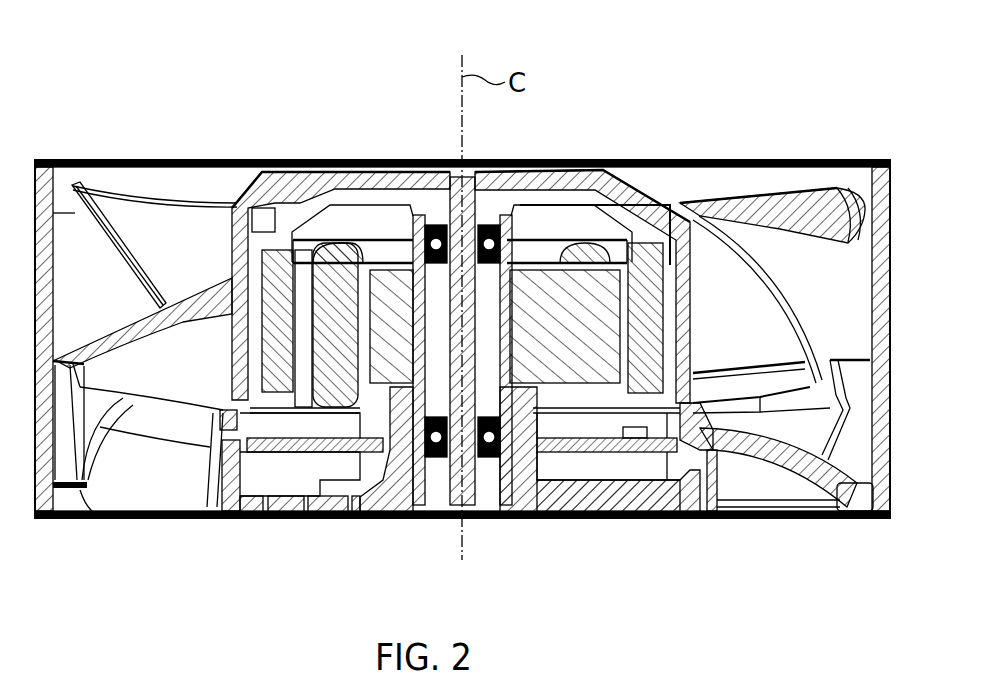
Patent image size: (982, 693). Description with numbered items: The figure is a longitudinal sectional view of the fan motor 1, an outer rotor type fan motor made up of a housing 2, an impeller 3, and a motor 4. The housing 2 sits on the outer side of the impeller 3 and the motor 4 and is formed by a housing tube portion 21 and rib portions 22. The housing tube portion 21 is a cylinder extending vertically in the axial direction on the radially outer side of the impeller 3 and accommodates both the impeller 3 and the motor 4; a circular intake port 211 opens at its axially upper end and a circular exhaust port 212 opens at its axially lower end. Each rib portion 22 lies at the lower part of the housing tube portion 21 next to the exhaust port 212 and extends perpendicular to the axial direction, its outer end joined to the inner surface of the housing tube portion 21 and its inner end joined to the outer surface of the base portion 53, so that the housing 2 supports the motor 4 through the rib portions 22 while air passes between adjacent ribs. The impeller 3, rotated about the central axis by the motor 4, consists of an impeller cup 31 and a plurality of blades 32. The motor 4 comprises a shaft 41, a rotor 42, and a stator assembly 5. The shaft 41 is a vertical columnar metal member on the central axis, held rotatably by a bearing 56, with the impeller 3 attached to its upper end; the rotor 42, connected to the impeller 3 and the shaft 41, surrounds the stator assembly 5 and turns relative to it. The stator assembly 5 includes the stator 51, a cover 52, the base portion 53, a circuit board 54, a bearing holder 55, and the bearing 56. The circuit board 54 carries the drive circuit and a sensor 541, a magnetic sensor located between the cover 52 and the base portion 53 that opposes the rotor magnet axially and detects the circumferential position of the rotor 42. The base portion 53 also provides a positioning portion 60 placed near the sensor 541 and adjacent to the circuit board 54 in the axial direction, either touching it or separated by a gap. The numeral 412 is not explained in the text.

The fan motor 1 is at (292, 72).
The housing 2 is at (228, 152).
The housing tube portion 21 is at (58, 262).
The intake port 211 is at (170, 162).
The exhaust port 212 is at (170, 498).
The rib portion 22 is at (808, 478).
The impeller 3 is at (741, 186).
The impeller cup 31 is at (683, 168).
The blades 32 is at (820, 165).
The motor 4 is at (333, 571).
The shaft 41 is at (415, 172).
The rotor holder bottom portion 412 is at (387, 514).
The rotor 42 is at (750, 505).
The stator assembly 5 is at (269, 527).
The stator 51 is at (571, 428).
The cover 52 is at (285, 185).
The base portion 53 is at (561, 519).
The circuit board 54 is at (296, 452).
The sensor 541 is at (630, 453).
The bearing holder 55 is at (500, 515).
The bearing 56 is at (358, 183).
The positioning portion 60 is at (692, 452).